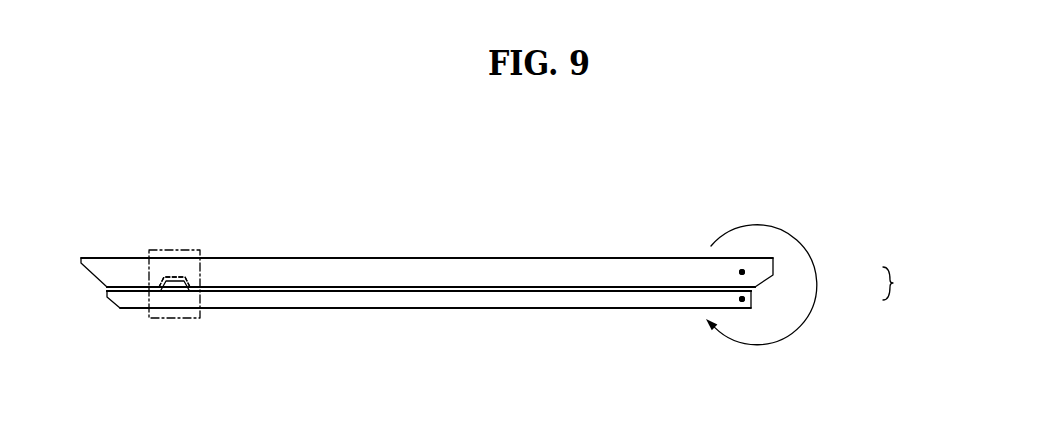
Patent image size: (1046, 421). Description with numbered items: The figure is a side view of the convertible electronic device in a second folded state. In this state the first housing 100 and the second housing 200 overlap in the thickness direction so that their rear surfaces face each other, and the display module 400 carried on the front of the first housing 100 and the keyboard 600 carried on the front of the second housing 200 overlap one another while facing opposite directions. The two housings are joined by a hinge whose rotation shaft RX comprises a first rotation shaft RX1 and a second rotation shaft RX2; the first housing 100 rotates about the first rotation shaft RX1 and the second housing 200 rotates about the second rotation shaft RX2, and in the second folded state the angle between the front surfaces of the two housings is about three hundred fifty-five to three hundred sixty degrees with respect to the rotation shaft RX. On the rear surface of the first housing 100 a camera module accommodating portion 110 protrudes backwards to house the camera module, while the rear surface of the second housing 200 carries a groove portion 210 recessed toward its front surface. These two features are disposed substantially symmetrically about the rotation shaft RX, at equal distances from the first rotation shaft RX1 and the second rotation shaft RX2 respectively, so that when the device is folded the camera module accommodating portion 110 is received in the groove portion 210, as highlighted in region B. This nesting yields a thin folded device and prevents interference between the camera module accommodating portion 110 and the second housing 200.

The second housing 200 is at (107, 267).
The keyboard 600 is at (510, 246).
The first housing 100 is at (122, 302).
The display module 400 is at (513, 322).
The camera module accommodating portion 110 is at (175, 291).
The groove portion 210 is at (175, 278).
The enlarged region B is at (202, 250).
The first rotation shaft RX1 is at (745, 272).
The second rotation shaft RX2 is at (745, 299).
The rotation shaft RX is at (832, 284).